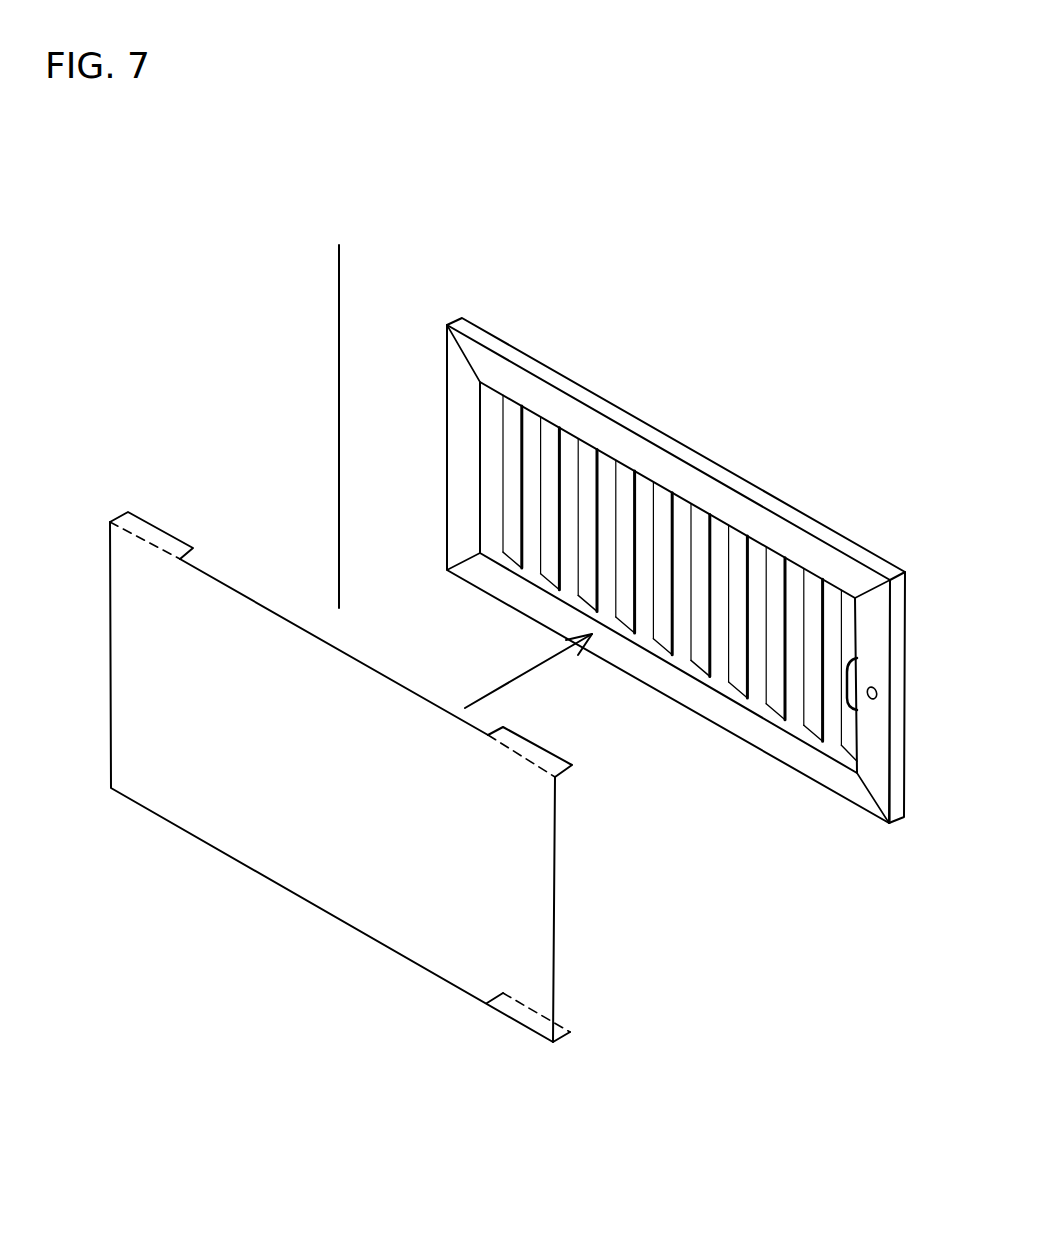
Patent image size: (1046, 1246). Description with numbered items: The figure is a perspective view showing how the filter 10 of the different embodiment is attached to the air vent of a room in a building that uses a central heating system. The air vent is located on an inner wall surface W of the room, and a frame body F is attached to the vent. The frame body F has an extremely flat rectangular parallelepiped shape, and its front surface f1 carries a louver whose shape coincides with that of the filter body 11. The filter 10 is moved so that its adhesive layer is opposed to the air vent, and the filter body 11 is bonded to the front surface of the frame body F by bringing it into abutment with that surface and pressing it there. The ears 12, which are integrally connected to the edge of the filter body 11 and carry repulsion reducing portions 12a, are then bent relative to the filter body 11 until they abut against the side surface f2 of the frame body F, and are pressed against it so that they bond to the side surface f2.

The filter 10 is at (375, 747).
The filter body 11 is at (325, 857).
The ears 12 is at (152, 537).
The repulsion reducing portions 12a is at (543, 770).
The frame body F is at (700, 570).
The front surface f1 is at (587, 483).
The side surface f2 is at (897, 702).
The inner wall surface W is at (380, 375).